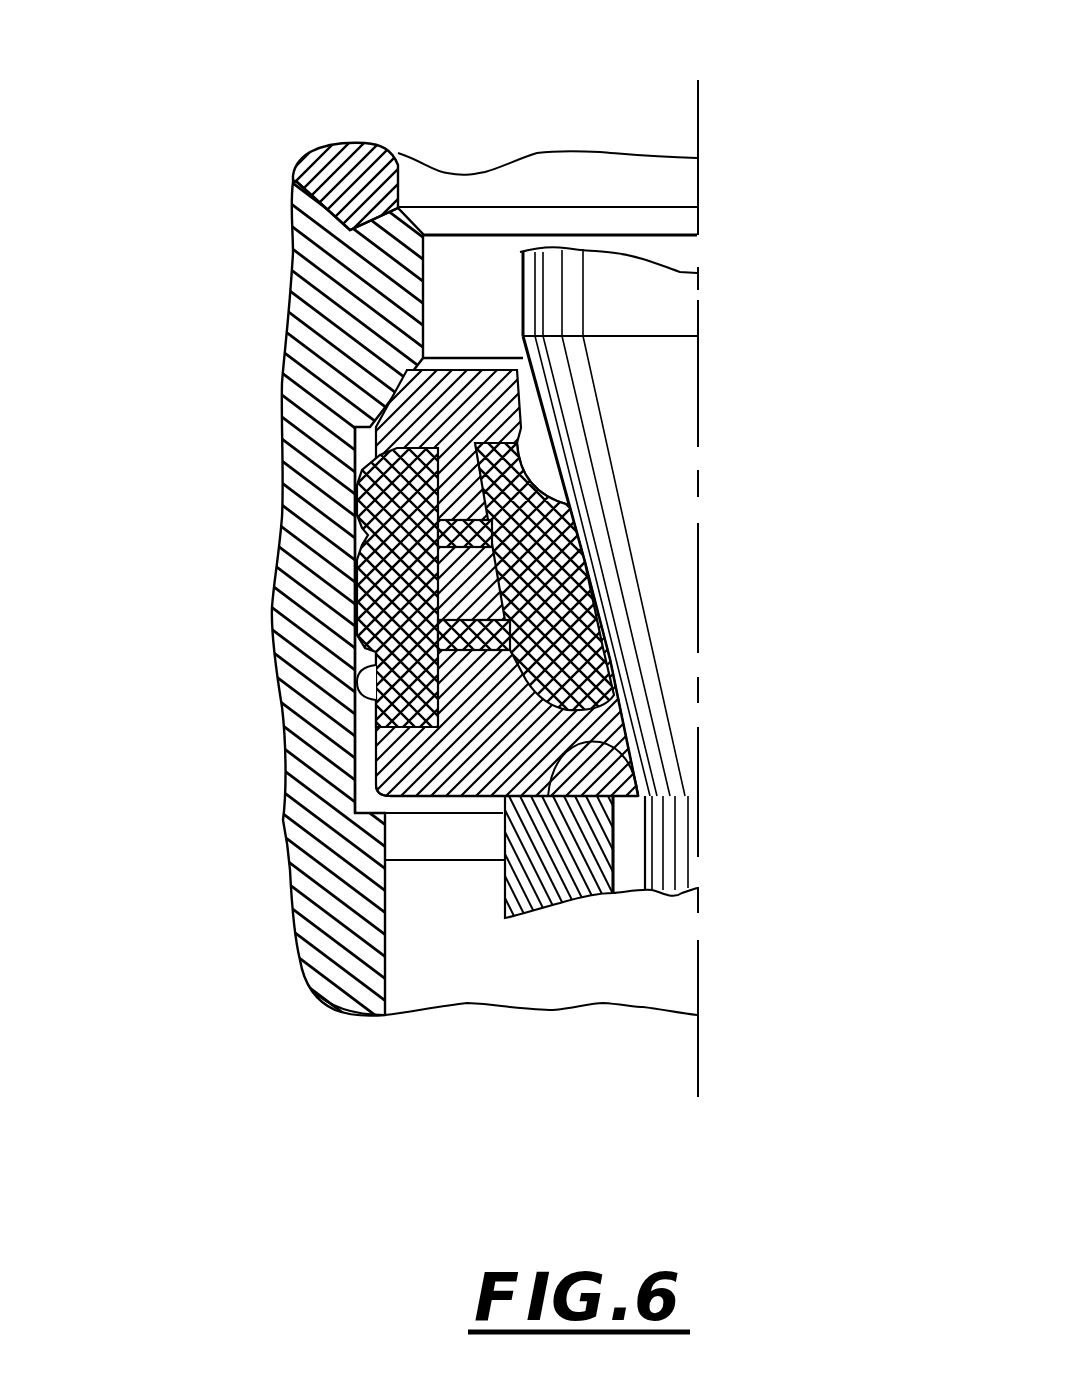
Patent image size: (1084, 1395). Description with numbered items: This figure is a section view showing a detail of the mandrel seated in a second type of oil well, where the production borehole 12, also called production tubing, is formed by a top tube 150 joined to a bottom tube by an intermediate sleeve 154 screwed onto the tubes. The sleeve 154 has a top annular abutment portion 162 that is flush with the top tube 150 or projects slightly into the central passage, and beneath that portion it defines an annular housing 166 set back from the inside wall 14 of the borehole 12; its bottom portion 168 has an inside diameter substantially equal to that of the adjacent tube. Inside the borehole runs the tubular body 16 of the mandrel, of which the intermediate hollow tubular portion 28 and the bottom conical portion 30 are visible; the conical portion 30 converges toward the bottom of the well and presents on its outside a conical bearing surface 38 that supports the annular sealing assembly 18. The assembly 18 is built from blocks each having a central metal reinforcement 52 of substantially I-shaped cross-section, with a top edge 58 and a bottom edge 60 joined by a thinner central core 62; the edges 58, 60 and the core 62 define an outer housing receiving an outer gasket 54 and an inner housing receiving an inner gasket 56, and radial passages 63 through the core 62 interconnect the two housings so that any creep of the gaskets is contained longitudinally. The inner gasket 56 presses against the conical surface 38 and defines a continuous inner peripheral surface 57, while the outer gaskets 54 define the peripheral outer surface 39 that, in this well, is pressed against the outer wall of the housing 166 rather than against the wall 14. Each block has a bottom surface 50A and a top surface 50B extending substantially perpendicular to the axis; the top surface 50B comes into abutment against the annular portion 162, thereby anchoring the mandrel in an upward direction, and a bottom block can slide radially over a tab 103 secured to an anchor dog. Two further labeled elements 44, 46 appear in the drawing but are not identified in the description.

The production borehole 12 is at (250, 228).
The inside wall 14 is at (500, 173).
The tubular body 16 is at (740, 354).
The annular sealing assembly 18 is at (422, 928).
The intermediate hollow tubular portion 28 is at (665, 290).
The bottom conical portion 30 is at (647, 627).
The conical bearing surface 38 is at (670, 440).
The peripheral outer surface 39 is at (320, 540).
The elastomer bridge 44 is at (360, 575).
The outer sealing lip 46 is at (590, 473).
The bottom surface 50A is at (452, 815).
The top surface 50B is at (492, 364).
The central metal reinforcement 52 is at (432, 765).
The outer gasket 54 is at (440, 600).
The inner gasket 56 is at (577, 513).
The inner peripheral surface 57 is at (583, 573).
The top edge 58 is at (430, 398).
The bottom edge 60 is at (433, 765).
The central core 62 is at (455, 478).
The passages 63 is at (742, 573).
The tab 103 is at (620, 747).
The top tube 150 is at (347, 160).
The intermediate sleeve 154 is at (355, 740).
The top annular abutment portion 162 is at (393, 315).
The annular housing 166 is at (363, 690).
The bottom portion 168 is at (382, 907).